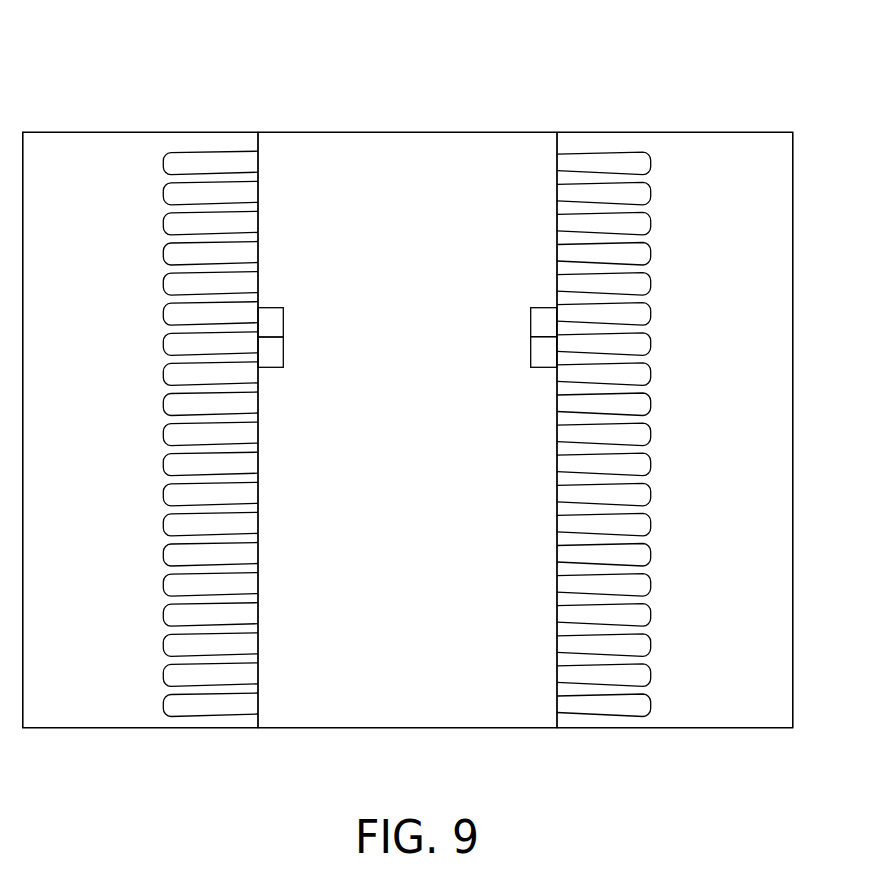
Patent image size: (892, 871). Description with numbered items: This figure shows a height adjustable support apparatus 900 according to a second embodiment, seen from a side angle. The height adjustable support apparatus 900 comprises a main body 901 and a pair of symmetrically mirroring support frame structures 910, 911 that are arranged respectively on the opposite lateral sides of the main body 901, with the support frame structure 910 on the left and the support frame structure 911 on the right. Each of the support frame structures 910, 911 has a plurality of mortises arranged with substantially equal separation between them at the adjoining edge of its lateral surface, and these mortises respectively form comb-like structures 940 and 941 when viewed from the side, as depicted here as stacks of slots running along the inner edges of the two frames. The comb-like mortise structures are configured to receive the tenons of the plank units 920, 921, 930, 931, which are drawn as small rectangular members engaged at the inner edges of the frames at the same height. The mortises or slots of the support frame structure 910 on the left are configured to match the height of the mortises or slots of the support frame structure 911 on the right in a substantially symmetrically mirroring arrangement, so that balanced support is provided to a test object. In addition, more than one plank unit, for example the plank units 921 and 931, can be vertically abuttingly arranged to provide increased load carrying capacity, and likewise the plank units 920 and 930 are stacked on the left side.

The height adjustable support apparatus 900 is at (668, 87).
The main body 901 is at (409, 162).
The support frame structure 910 is at (101, 162).
The support frame structure 911 is at (733, 163).
The plank unit 920 is at (272, 325).
The plank unit 921 is at (542, 326).
The plank unit 930 is at (272, 349).
The plank unit 931 is at (542, 349).
The comb-like structure 940 is at (282, 289).
The comb-like structure 941 is at (538, 289).